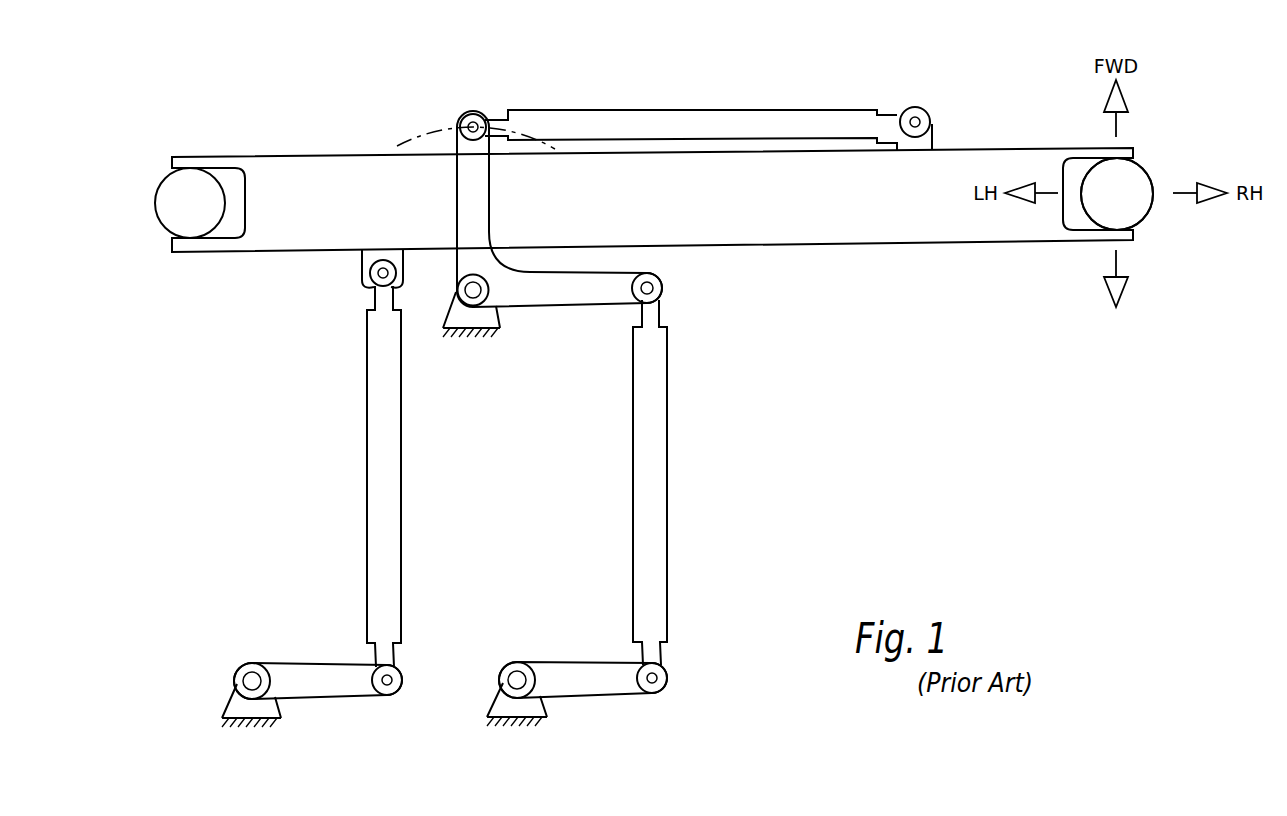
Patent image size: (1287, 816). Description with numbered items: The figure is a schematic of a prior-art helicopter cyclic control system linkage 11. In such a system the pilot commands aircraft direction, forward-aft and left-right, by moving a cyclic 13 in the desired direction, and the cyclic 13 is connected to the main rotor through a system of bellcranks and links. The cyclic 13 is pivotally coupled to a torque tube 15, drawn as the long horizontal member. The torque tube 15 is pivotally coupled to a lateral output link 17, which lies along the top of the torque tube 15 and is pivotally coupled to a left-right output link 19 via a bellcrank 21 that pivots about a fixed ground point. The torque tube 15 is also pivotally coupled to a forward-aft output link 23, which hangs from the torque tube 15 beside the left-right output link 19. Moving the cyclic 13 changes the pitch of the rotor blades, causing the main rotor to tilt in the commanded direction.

The cyclic control system linkage 11 is at (658, 66).
The cyclic 13 is at (1137, 214).
The torque tube 15 is at (331, 154).
The lateral output link 17 is at (757, 110).
The left-right output link 19 is at (668, 422).
The bellcrank 21 is at (543, 311).
The forward-aft output link 23 is at (367, 432).